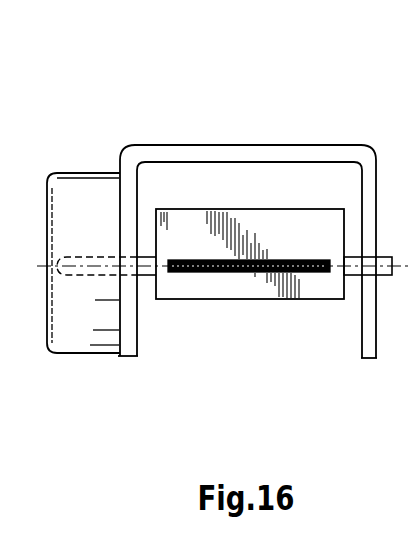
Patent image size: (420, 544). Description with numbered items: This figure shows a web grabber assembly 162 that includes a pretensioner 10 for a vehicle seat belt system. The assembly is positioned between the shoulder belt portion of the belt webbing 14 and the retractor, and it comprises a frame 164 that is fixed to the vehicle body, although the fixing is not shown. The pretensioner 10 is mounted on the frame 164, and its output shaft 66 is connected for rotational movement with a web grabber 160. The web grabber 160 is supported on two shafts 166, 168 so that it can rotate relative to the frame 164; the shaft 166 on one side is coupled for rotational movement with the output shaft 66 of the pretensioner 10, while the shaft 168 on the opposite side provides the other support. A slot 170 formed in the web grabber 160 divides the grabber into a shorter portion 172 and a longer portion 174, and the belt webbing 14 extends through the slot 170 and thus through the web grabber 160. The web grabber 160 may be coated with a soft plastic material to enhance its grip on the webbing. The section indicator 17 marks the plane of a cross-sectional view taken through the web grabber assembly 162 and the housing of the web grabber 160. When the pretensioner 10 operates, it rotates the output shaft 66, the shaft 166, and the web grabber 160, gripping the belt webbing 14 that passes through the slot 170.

The pretensioner 10 is at (84, 358).
The belt webbing 14 is at (286, 258).
The section line 17 is at (298, 256).
The output shaft 66 is at (85, 255).
The web grabber 160 is at (250, 242).
The web grabber assembly 162 is at (219, 211).
The frame 164 is at (148, 145).
The shaft 166 is at (142, 277).
The shaft 168 is at (353, 278).
The slot 170 is at (228, 274).
The shorter portion 172 is at (180, 287).
The longer portion 174 is at (210, 232).